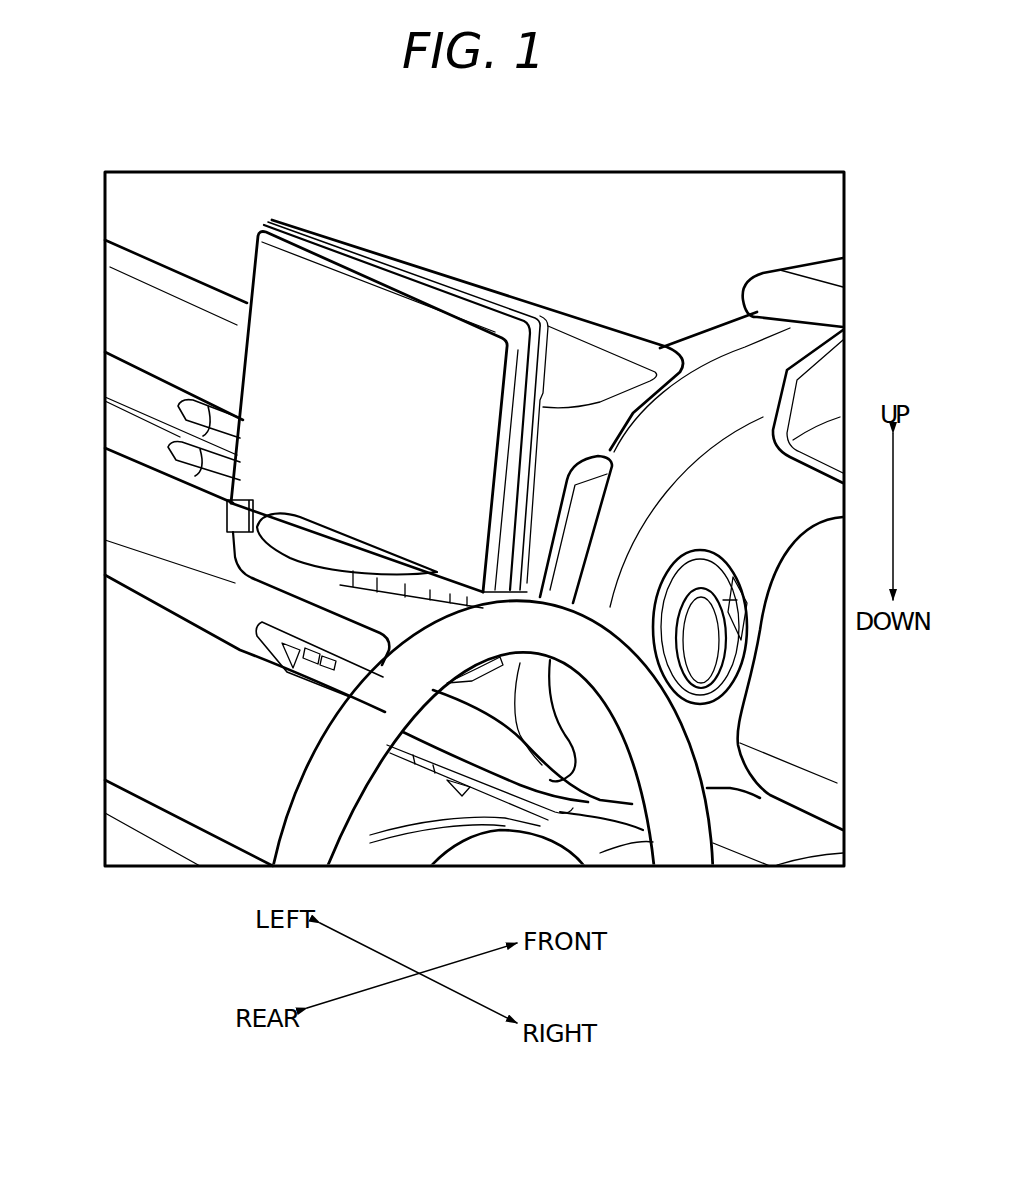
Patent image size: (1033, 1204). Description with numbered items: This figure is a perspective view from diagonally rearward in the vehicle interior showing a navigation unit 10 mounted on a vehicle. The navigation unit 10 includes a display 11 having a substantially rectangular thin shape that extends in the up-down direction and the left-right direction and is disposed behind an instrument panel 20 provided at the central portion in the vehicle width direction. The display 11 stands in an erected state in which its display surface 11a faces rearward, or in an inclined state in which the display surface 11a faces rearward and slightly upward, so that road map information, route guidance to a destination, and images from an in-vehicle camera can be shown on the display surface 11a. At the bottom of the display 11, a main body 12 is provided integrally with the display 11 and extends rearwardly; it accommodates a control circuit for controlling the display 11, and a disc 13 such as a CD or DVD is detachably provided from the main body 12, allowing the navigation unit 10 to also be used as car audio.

The navigation unit 10 is at (366, 363).
The display 11 is at (366, 363).
The display surface 11a is at (287, 333).
The main body 12 is at (248, 553).
The disc 13 is at (288, 559).
The instrument panel 20 is at (585, 355).